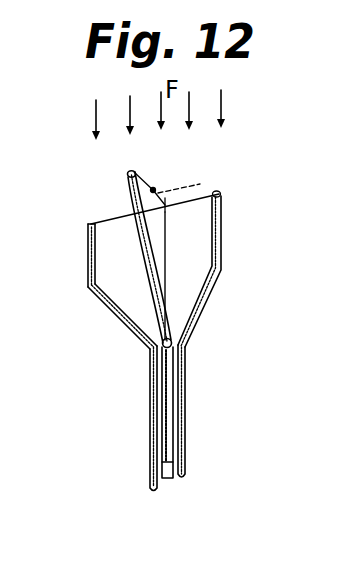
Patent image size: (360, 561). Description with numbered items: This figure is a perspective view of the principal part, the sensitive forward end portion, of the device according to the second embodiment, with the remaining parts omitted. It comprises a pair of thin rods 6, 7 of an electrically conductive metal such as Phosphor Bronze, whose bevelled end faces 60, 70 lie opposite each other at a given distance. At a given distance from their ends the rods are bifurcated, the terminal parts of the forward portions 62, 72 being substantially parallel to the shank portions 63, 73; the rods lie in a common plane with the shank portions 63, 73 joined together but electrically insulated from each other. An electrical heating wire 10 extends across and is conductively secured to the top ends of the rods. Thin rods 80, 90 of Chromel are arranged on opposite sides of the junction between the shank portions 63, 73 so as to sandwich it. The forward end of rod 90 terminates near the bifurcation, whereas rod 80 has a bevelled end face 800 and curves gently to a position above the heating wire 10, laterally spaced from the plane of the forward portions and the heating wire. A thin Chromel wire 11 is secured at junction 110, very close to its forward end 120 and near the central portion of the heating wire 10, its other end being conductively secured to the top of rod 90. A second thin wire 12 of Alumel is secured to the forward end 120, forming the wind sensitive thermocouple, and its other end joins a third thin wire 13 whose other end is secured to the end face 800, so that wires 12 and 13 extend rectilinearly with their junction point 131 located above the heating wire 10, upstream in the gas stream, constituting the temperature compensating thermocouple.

The thin rod 6 is at (187, 373).
The thin rod 7 is at (150, 356).
The electrical heating wire 10 is at (118, 218).
The thin wire 11 is at (168, 247).
The second thin wire 12 is at (166, 200).
The third thin wire 13 is at (125, 170).
The bevelled end face 60 is at (224, 196).
The forward portion 62 is at (222, 258).
The shank portion 63 is at (186, 411).
The bevelled end face 70 is at (96, 226).
The forward portion 72 is at (114, 310).
The shank portion 73 is at (160, 449).
The thin metal rod 80 is at (130, 302).
The thin metal rod 90 is at (187, 448).
The junction 110 is at (186, 217).
The forward end 120 is at (193, 186).
The junction point 131 is at (154, 188).
The bevelled end face 800 is at (127, 176).